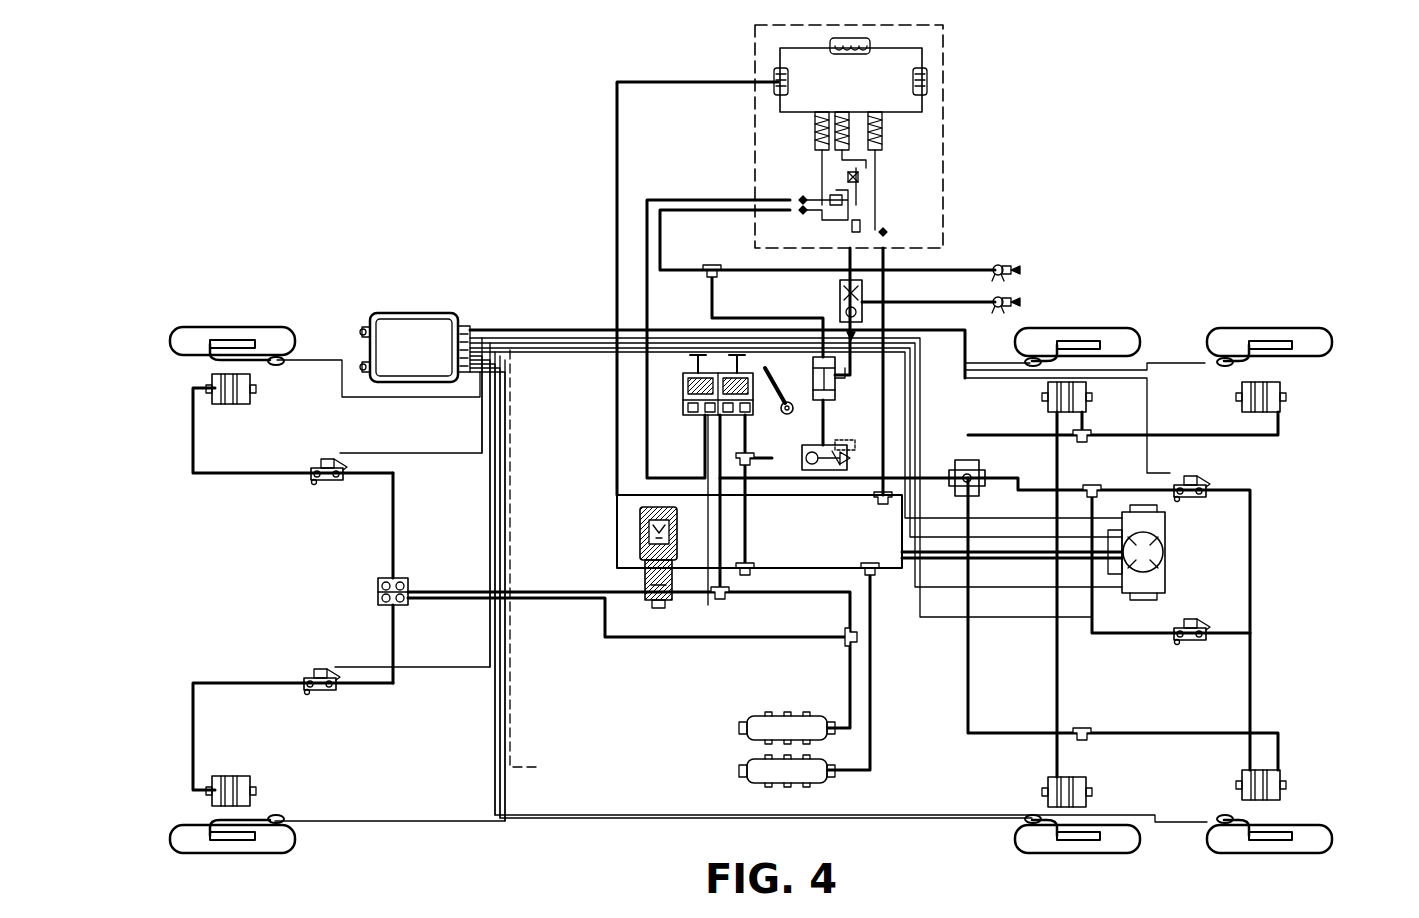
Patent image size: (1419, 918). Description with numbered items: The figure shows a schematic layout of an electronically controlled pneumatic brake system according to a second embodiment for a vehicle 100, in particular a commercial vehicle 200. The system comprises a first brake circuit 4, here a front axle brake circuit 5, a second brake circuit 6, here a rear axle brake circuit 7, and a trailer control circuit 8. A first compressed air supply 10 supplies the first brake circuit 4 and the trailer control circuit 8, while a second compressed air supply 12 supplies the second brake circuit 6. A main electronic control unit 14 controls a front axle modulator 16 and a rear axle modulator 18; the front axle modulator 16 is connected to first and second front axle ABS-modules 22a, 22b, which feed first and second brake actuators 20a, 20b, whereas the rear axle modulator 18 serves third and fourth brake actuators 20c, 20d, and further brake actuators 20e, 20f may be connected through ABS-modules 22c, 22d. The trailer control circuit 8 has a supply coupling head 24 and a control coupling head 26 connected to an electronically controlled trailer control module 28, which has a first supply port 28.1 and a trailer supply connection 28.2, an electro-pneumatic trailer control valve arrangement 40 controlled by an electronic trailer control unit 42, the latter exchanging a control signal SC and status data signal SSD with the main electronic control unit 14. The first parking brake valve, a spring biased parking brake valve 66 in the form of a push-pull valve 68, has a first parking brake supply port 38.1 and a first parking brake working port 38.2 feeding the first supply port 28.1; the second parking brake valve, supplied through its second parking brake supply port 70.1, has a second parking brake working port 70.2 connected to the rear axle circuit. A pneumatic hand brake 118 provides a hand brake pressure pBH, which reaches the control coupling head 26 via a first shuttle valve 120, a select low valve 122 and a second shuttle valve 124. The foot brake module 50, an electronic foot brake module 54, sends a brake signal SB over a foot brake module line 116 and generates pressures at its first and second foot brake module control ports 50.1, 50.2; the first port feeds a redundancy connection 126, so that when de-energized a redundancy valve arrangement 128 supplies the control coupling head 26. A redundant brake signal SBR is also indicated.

The vehicle 100 is at (157, 94).
The commercial vehicle 200 is at (245, 140).
The first brake circuit 4 is at (193, 562).
The front axle brake circuit 5 is at (243, 578).
The second brake circuit 6 is at (1350, 544).
The rear axle brake circuit 7 is at (1300, 562).
The trailer control circuit 8 is at (1056, 176).
The first compressed air supply 10 is at (738, 728).
The second compressed air supply 12 is at (738, 772).
The main electronic control unit 14 is at (414, 315).
The front axle modulator 16 is at (362, 584).
The rear axle modulator 18 is at (1168, 552).
The first brake actuator 20a is at (232, 405).
The second brake actuator 20b is at (228, 776).
The third brake actuator 20c is at (1094, 395).
The fourth brake actuator 20d is at (1086, 790).
The brake actuator 20e is at (1282, 397).
The brake actuator 20f is at (1284, 785).
The first front axle ABS-module 22a is at (330, 485).
The second front axle ABS-module 22b is at (318, 668).
The ABS-module 22c is at (1194, 498).
The ABS-module 22d is at (1206, 628).
The supply coupling head 24 is at (1010, 268).
The control coupling head 26 is at (1010, 300).
The electronically controlled trailer control module 28 is at (843, 249).
The first supply port 28.1 is at (752, 200).
The trailer supply connection 28.2 is at (760, 220).
The first parking brake supply port 38.1 is at (706, 606).
The first parking brake working port 38.2 is at (640, 359).
The electro-pneumatic trailer control valve arrangement 40 is at (797, 128).
The electronic trailer control unit 42 is at (922, 58).
The foot brake module 50 is at (601, 548).
The electronic foot brake module 54 is at (618, 505).
The first foot brake module control port 50.1 is at (643, 600).
The second foot brake module control port 50.2 is at (655, 602).
The spring biased parking brake valve 66 is at (640, 359).
The push-pull valve 68 is at (672, 378).
The second parking brake supply port 70.1 is at (750, 415).
The second parking brake working port 70.2 is at (760, 415).
The foot brake module line 116 is at (515, 468).
The pneumatic hand brake 118 is at (765, 375).
The first shuttle valve 120 is at (838, 458).
The select low valve 122 is at (837, 386).
The second shuttle valve 124 is at (885, 277).
The redundancy connection 126 is at (883, 257).
The redundancy valve arrangement 128 is at (893, 128).
The brake signal SB is at (575, 540).
The trailer control module status data signal SSD is at (601, 288).
The electronic control signal SC is at (617, 162).
The redundant brake signal SBR is at (515, 394).
The hand brake pressure pBH is at (965, 338).